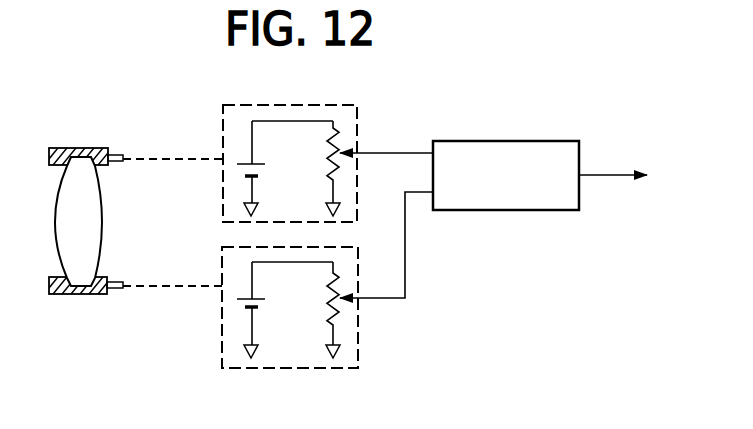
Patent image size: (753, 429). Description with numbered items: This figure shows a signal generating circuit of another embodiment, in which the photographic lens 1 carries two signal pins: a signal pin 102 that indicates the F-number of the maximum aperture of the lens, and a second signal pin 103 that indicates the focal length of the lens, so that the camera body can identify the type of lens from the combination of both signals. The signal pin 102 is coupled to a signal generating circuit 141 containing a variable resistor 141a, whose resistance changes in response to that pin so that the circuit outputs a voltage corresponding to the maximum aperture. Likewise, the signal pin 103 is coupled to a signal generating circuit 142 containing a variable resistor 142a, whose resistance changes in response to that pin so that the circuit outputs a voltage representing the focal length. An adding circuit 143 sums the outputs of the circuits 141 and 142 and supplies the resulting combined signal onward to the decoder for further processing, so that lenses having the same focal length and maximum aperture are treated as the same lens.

The photographic lens 1 is at (57, 245).
The signal pin 102 is at (116, 155).
The signal pin 103 is at (114, 289).
The signal generating circuit 141 is at (254, 164).
The variable resistor 141a is at (322, 155).
The signal generating circuit 142 is at (256, 310).
The variable resistor 142a is at (322, 296).
The adding circuit 143 is at (495, 212).